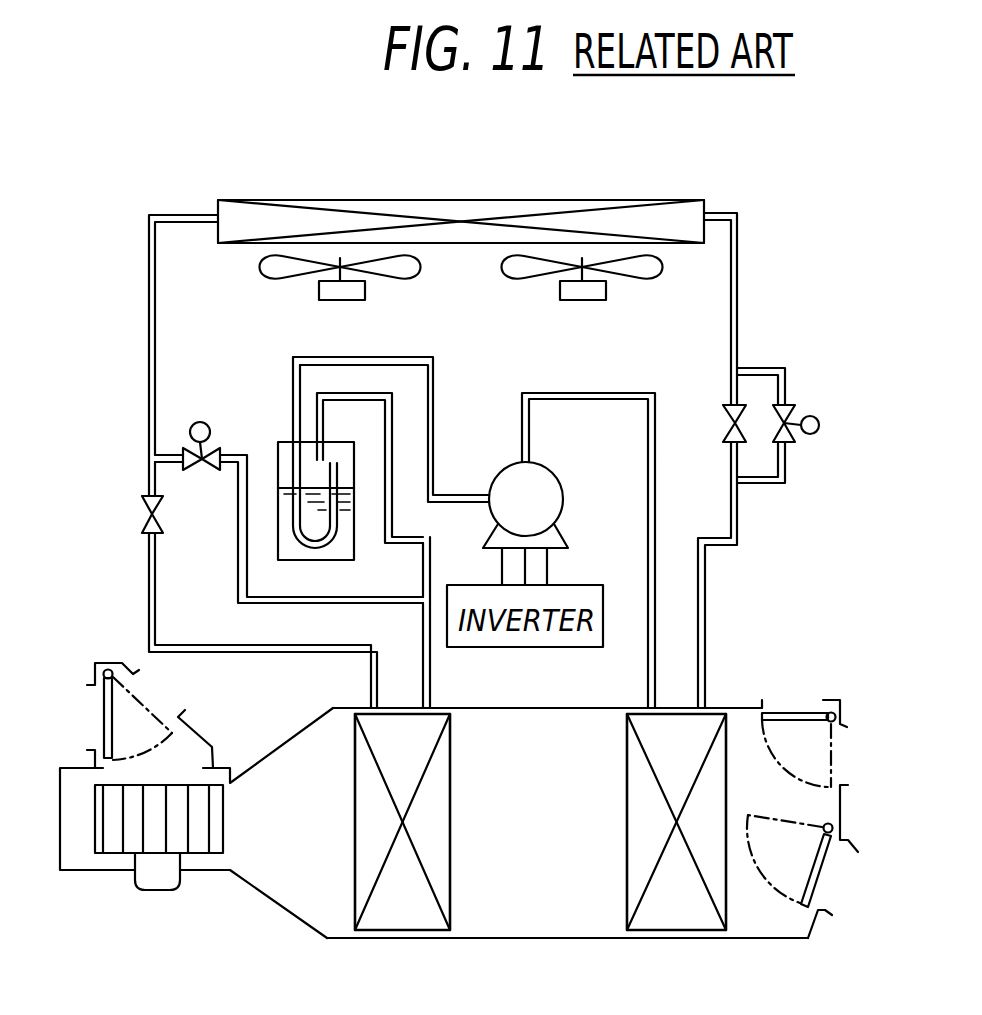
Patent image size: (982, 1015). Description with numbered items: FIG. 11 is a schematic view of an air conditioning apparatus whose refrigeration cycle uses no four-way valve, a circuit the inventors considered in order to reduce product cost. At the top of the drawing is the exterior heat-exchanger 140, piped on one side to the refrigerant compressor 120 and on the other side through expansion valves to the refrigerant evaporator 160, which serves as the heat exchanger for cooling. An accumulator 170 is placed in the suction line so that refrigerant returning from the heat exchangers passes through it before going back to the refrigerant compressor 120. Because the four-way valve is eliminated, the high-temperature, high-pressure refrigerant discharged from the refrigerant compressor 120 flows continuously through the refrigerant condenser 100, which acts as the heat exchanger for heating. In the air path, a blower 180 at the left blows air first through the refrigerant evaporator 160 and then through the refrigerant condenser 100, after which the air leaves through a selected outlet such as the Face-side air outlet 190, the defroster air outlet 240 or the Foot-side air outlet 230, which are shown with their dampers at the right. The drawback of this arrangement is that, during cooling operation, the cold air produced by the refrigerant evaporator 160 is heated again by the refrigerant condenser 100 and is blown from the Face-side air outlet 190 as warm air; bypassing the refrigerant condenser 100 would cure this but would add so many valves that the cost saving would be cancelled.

The refrigerant condenser 100 is at (728, 730).
The refrigerant compressor 120 is at (560, 485).
The exterior heat-exchanger 140 is at (560, 200).
The refrigerant evaporator 160 is at (353, 745).
The accumulator 170 is at (338, 560).
The blower 180 is at (118, 853).
The Face-side air outlet 190 is at (843, 740).
The Foot-side air outlet 230 is at (842, 880).
The defroster air outlet 240 is at (792, 702).